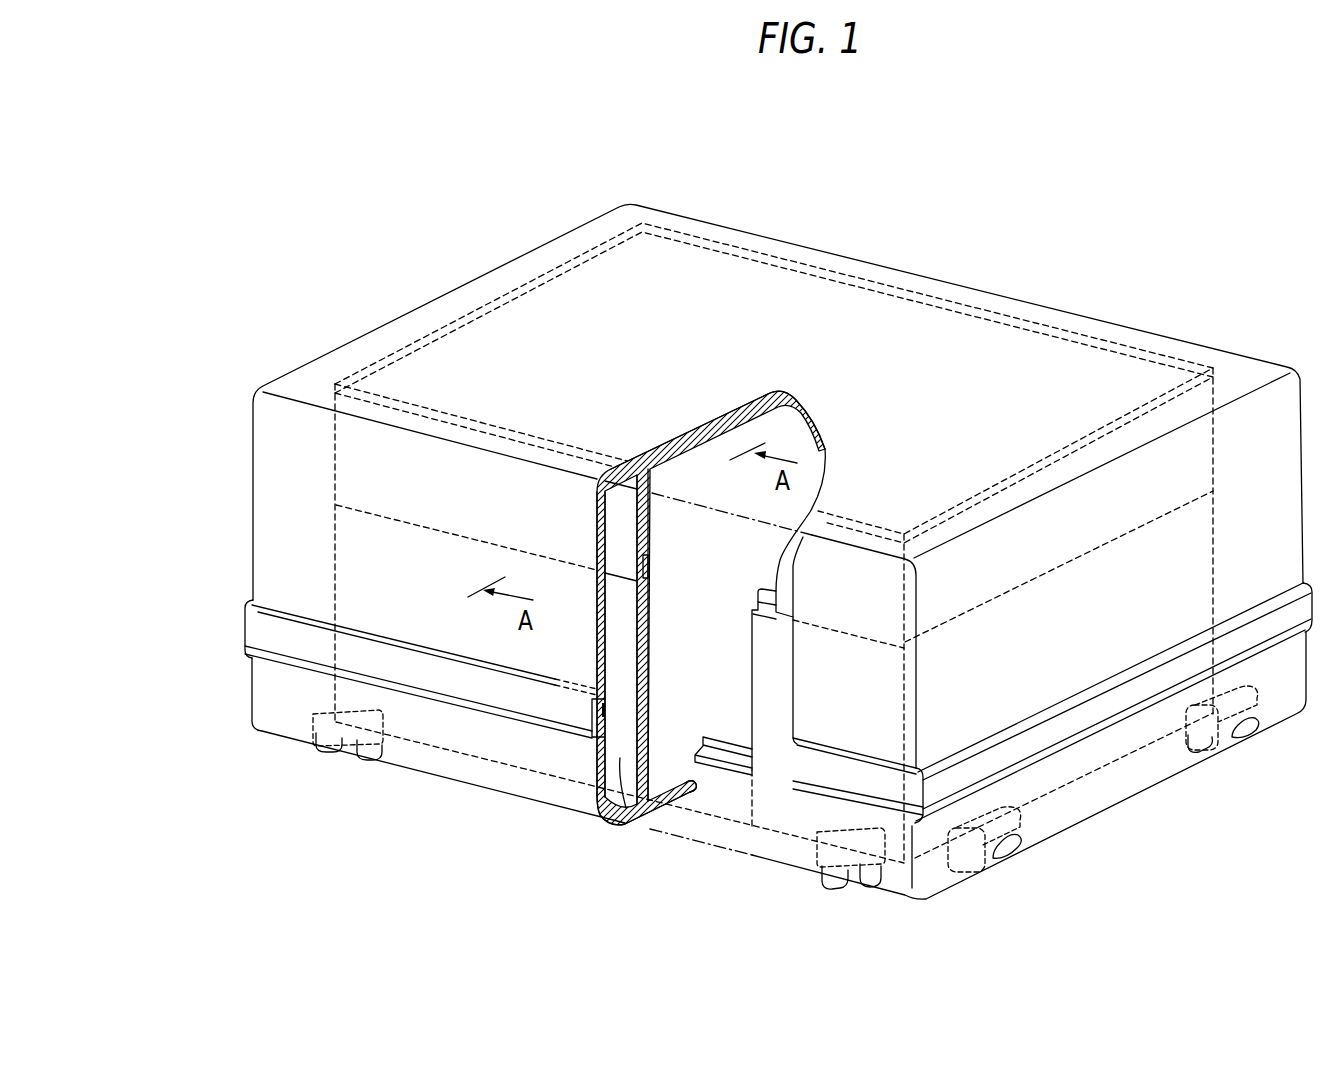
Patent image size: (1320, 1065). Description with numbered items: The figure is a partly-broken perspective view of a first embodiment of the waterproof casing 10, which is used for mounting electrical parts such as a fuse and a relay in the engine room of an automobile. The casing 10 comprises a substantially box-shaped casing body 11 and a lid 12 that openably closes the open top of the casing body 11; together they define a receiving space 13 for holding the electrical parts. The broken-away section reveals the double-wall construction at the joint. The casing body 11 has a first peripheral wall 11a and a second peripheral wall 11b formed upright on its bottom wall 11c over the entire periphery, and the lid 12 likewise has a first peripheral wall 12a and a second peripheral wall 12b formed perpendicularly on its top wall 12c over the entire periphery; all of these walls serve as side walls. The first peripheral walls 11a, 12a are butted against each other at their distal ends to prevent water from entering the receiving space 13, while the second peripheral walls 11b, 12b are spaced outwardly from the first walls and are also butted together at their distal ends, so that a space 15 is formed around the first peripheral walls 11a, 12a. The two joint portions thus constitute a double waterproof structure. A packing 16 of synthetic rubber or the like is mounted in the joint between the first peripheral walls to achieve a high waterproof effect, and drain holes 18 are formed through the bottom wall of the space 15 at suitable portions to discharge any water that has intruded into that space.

The waterproof casing 10 is at (893, 260).
The casing body 11 is at (524, 797).
The first peripheral wall 11a is at (650, 623).
The second peripheral wall 11b is at (590, 773).
The bottom wall 11c is at (693, 793).
The lid 12 is at (247, 440).
The first peripheral wall 12a is at (652, 522).
The second peripheral wall 12b is at (597, 628).
The top wall 12c is at (698, 443).
The receiving space 13 is at (707, 680).
The space 15 is at (616, 816).
The packing 16 is at (652, 560).
The drain holes 18 is at (347, 755).